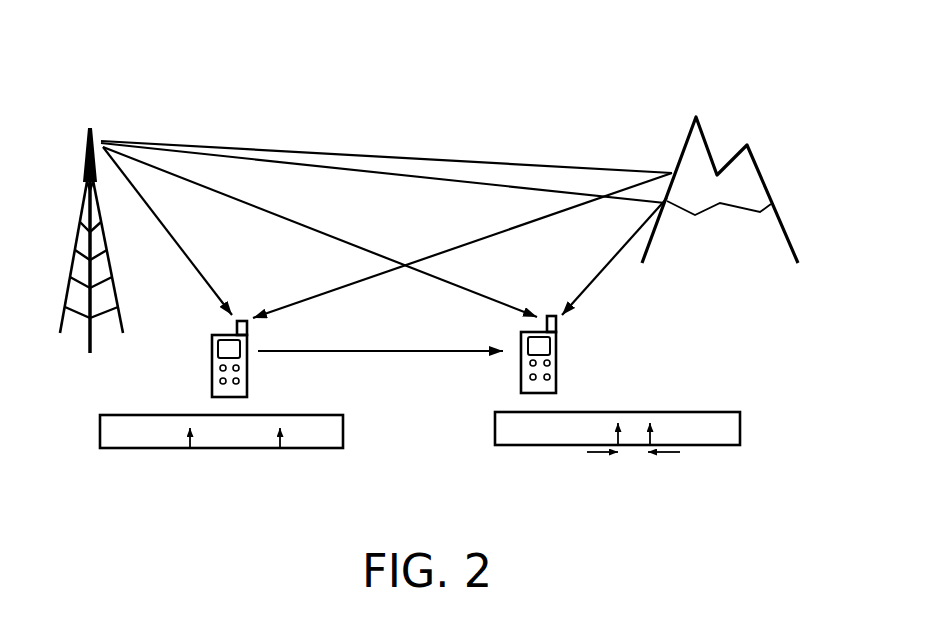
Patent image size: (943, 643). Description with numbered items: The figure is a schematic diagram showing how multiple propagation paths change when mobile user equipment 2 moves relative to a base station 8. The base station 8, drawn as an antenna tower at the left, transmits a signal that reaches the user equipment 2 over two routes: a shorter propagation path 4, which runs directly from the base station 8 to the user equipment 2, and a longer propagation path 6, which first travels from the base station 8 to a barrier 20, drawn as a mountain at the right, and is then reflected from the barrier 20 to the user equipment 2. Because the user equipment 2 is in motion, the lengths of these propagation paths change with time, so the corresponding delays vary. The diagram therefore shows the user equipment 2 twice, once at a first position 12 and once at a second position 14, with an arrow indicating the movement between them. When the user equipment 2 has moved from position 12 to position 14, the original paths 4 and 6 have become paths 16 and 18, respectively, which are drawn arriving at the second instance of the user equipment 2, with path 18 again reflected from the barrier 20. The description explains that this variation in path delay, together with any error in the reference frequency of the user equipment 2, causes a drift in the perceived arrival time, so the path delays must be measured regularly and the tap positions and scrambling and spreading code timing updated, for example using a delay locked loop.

The user equipment 2 is at (212, 380).
The shorter propagation path 4 is at (168, 233).
The longer propagation path 6 is at (520, 165).
The base station 8 is at (67, 126).
The position 12 is at (122, 467).
The position 14 is at (712, 470).
The path 16 is at (506, 302).
The path 18 is at (382, 175).
The obstacle (mountain) 20 is at (752, 118).